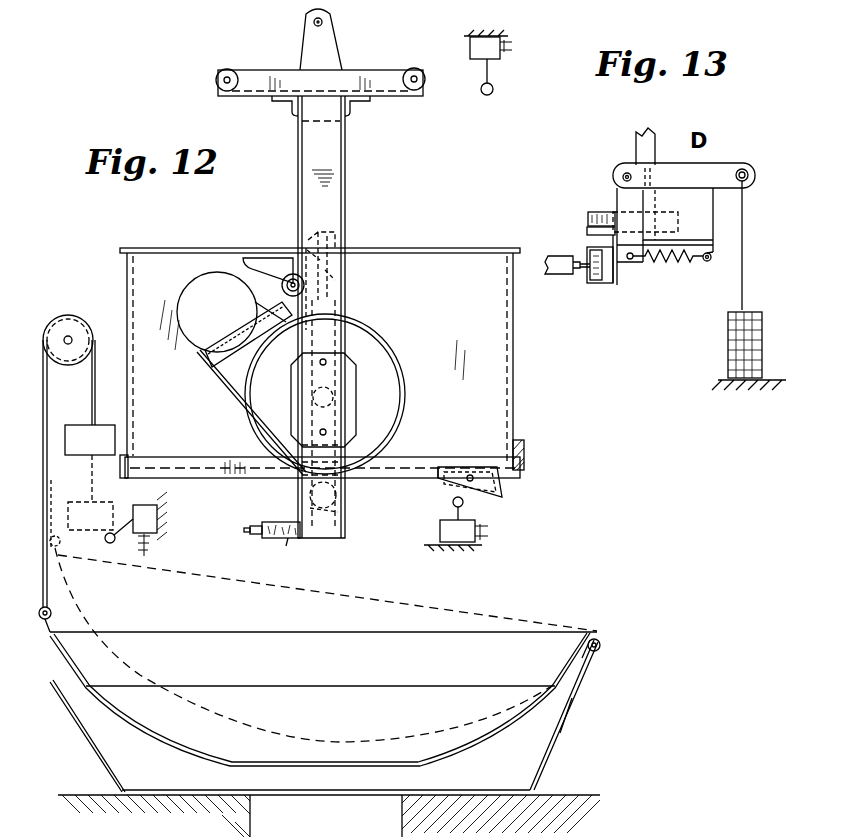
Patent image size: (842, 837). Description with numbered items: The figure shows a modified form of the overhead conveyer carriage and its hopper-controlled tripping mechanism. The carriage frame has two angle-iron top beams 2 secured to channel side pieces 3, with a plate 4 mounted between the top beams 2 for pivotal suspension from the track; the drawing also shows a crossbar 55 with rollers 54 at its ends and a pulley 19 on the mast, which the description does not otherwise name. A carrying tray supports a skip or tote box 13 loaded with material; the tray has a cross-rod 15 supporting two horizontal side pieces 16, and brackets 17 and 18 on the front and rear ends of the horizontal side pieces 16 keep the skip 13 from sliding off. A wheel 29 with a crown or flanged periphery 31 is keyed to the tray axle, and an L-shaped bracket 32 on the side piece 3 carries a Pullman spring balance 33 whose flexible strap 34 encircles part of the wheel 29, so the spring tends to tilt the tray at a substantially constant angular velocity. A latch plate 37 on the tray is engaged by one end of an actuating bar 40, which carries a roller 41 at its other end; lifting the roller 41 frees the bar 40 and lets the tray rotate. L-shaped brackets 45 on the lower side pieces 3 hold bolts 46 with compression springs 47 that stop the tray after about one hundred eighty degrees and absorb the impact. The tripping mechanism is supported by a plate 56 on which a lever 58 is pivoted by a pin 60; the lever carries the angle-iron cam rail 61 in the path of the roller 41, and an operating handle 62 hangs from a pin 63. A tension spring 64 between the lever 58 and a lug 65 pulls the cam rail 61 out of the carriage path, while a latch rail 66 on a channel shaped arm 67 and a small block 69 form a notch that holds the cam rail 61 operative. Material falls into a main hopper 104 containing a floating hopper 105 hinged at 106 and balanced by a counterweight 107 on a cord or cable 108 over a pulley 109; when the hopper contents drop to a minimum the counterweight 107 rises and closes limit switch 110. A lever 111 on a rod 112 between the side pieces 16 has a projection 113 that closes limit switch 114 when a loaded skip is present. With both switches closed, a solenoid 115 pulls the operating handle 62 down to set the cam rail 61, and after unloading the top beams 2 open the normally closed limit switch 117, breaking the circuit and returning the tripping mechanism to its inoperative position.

In FIG. 12, the top beams 2 is at (285, 104).
In FIG. 12, the channel side pieces 3 is at (330, 184).
In FIG. 12, the plate 4 is at (328, 50).
In FIG. 12, the skip or tote box 13 is at (436, 254).
In FIG. 12, the cross-rod 15 is at (338, 496).
In FIG. 12, the horizontal side pieces 16 is at (246, 478).
In FIG. 12, the bracket 17 is at (530, 456).
In FIG. 12, the bracket 18 is at (128, 470).
In FIG. 12, the pulley 19 is at (325, 234).
In FIG. 12, the wheel 29 is at (384, 396).
In FIG. 12, the crown or flanged periphery 31 is at (388, 352).
In FIG. 12, the L-shaped bracket 32 is at (226, 368).
In FIG. 12, the Pullman spring balance 33 is at (198, 288).
In FIG. 12, the flexible strap 34 is at (242, 410).
In FIG. 12, the latch plate 37 is at (268, 266).
In FIG. 13, the actuating bar 40 is at (562, 268).
In FIG. 13, the roller 41 is at (598, 282).
In FIG. 12, the L-shaped brackets 45 is at (285, 554).
In FIG. 12, the bolts 46 is at (255, 534).
In FIG. 12, the compression springs 47 is at (275, 521).
In FIG. 12, the guide rollers 54 is at (226, 69).
In FIG. 12, the crossbar 55 is at (374, 86).
In FIG. 13, the plate 56 is at (704, 236).
In FIG. 13, the lever 58 is at (613, 190).
In FIG. 13, the pin 60 is at (626, 171).
In FIG. 13, the cam rail 61 is at (616, 278).
In FIG. 13, the operating handle 62 is at (746, 276).
In FIG. 13, the pin 63 is at (747, 173).
In FIG. 13, the tension spring 64 is at (670, 262).
In FIG. 13, the lug 65 is at (712, 260).
In FIG. 13, the latch rail 66 is at (587, 233).
In FIG. 13, the channel shaped arm 67 is at (598, 220).
In FIG. 13, the small block 69 is at (632, 240).
In FIG. 12, the main hopper 104 is at (540, 748).
In FIG. 12, the floating hopper 105 is at (68, 660).
In FIG. 12, the hinge 106 is at (600, 648).
In FIG. 12, the counterweight 107 is at (84, 448).
In FIG. 12, the cord or cable 108 is at (44, 540).
In FIG. 12, the pulley 109 is at (70, 328).
In FIG. 12, the limit switch 110 is at (158, 516).
In FIG. 12, the lever 111 is at (440, 478).
In FIG. 12, the rod 112 is at (470, 474).
In FIG. 12, the projection 113 is at (498, 494).
In FIG. 12, the limit switch 114 is at (440, 533).
In FIG. 13, the solenoid 115 is at (740, 352).
In FIG. 12, the limit switch 117 is at (496, 58).